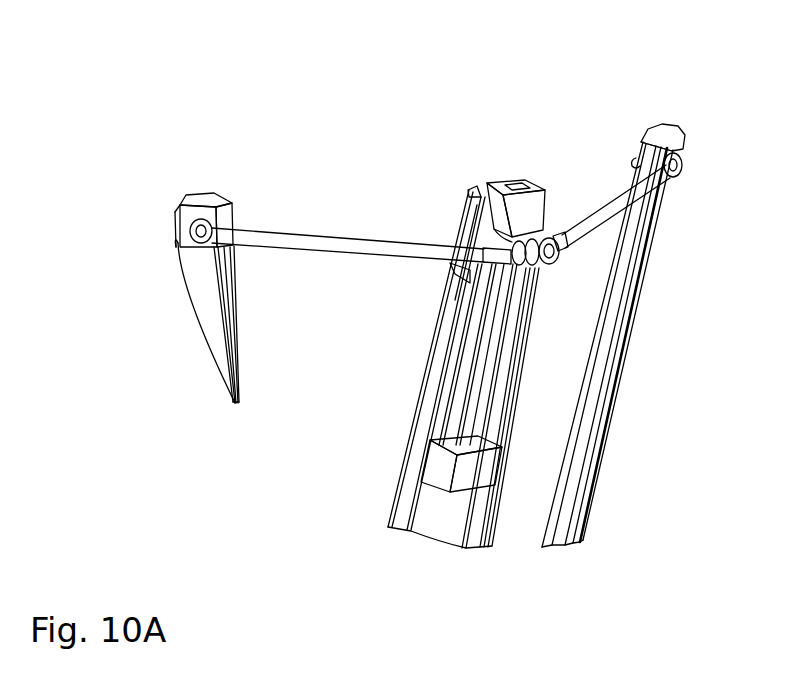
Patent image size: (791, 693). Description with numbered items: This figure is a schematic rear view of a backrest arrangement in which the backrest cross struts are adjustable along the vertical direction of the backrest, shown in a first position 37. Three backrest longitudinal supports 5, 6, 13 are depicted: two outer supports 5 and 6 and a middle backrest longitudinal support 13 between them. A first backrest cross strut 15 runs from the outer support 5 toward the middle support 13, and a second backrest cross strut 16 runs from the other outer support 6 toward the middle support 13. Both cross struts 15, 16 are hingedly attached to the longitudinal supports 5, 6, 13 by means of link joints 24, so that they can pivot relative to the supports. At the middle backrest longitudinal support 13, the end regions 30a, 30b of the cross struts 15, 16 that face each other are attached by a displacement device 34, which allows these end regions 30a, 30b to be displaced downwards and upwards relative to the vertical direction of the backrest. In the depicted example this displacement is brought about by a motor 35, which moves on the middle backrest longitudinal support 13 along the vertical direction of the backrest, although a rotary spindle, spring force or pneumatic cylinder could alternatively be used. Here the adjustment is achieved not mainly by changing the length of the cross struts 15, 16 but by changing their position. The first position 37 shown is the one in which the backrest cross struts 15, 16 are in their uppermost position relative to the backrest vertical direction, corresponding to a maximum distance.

The backrest longitudinal support 5 is at (620, 342).
The backrest longitudinal support 6 is at (195, 297).
The middle backrest longitudinal support 13 is at (420, 428).
The first backrest cross strut 15 is at (608, 212).
The second backrest cross strut 16 is at (357, 259).
The link joint 24 is at (190, 226).
The end region 30a is at (562, 237).
The end region 30b is at (503, 246).
The displacement device 34 is at (551, 376).
The motor 35 is at (480, 481).
The first position 37 is at (86, 90).